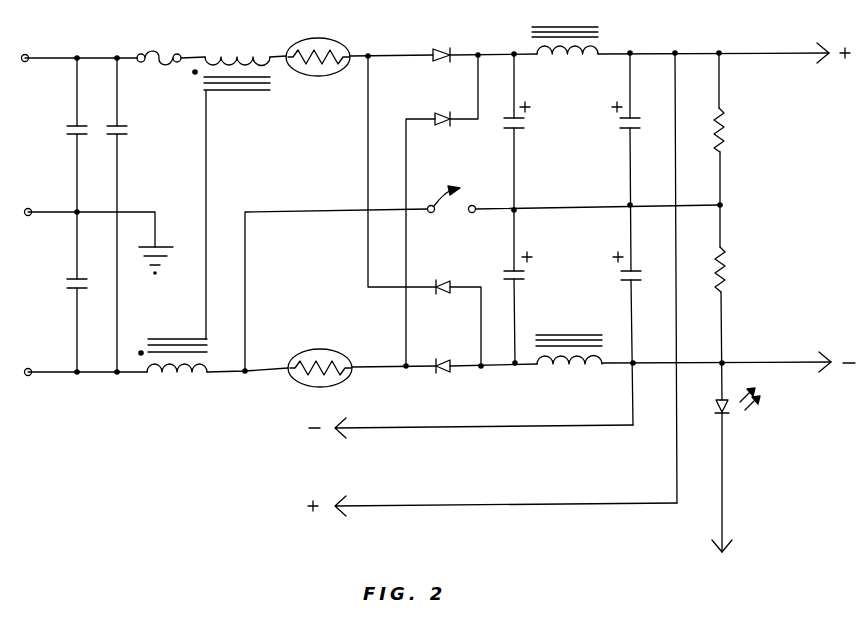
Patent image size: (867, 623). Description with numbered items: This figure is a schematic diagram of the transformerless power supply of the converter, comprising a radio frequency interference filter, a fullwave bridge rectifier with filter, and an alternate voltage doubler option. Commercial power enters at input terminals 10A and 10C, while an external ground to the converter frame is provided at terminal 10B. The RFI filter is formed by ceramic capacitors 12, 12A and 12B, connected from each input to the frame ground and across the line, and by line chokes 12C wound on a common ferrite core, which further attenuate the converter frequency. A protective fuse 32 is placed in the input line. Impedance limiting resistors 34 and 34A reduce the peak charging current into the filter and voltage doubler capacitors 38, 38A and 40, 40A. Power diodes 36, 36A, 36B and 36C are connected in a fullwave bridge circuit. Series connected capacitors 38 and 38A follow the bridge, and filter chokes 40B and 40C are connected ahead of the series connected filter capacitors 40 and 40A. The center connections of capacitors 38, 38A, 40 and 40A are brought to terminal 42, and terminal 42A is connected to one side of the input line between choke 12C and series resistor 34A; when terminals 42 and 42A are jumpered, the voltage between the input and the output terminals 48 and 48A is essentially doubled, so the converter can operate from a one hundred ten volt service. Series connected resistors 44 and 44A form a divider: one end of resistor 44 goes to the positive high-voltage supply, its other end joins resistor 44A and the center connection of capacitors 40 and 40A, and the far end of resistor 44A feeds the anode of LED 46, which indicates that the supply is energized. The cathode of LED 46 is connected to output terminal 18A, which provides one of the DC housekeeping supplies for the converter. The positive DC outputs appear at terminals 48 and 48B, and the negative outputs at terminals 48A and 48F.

The commercial power input terminal 10A is at (26, 54).
The external ground terminal 10B is at (30, 208).
The commercial power input terminal 10C is at (30, 368).
The ceramic capacitor 12 is at (73, 125).
The ceramic capacitor 12A is at (74, 278).
The ceramic capacitor 12B is at (120, 125).
The line chokes 12C is at (214, 62).
The protective fuse 32 is at (162, 54).
The impedance limiting resistor 34 is at (331, 75).
The impedance limiting resistor 34A is at (340, 350).
The power diode 36 is at (449, 29).
The power diode 36A is at (436, 116).
The power diode 36B is at (446, 293).
The power diode 36C is at (438, 382).
The filter and voltage doubler capacitor 38 is at (518, 131).
The filter and voltage doubler capacitor 38A is at (518, 282).
The filter capacitor 40 is at (626, 131).
The filter capacitor 40A is at (627, 282).
The filter choke 40B is at (558, 58).
The filter choke 40C is at (580, 368).
The terminal 42 is at (472, 205).
The terminal 42A is at (431, 213).
The resistor 44 is at (725, 131).
The resistor 44A is at (726, 274).
The LED 46 is at (727, 414).
The positive DC output terminal 48 is at (829, 48).
The negative DC output terminal 48A is at (831, 356).
The positive DC output terminal 48B is at (341, 511).
The negative DC output terminal 48F is at (341, 434).
The output terminal 18A is at (728, 545).